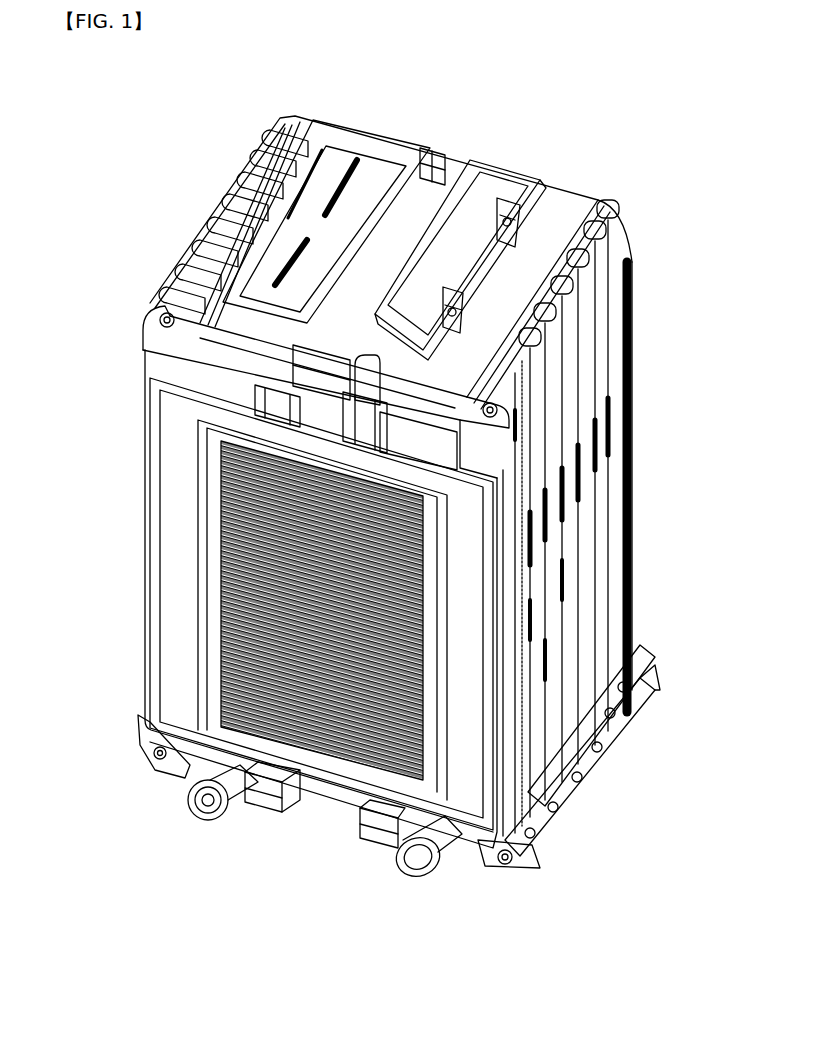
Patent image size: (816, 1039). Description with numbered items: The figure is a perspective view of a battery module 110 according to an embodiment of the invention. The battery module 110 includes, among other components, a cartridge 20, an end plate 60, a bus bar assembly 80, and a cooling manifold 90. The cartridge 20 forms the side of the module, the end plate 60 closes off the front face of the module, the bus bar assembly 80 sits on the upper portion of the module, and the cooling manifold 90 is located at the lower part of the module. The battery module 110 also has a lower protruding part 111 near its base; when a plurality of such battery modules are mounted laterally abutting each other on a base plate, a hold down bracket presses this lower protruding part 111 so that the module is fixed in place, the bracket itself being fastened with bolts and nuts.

The battery module 110 is at (135, 155).
The bus bar assembly 80 is at (493, 187).
The cartridge 20 is at (604, 524).
The lower protruding part 111 is at (643, 672).
The end plate 60 is at (178, 683).
The cooling manifold 90 is at (363, 833).